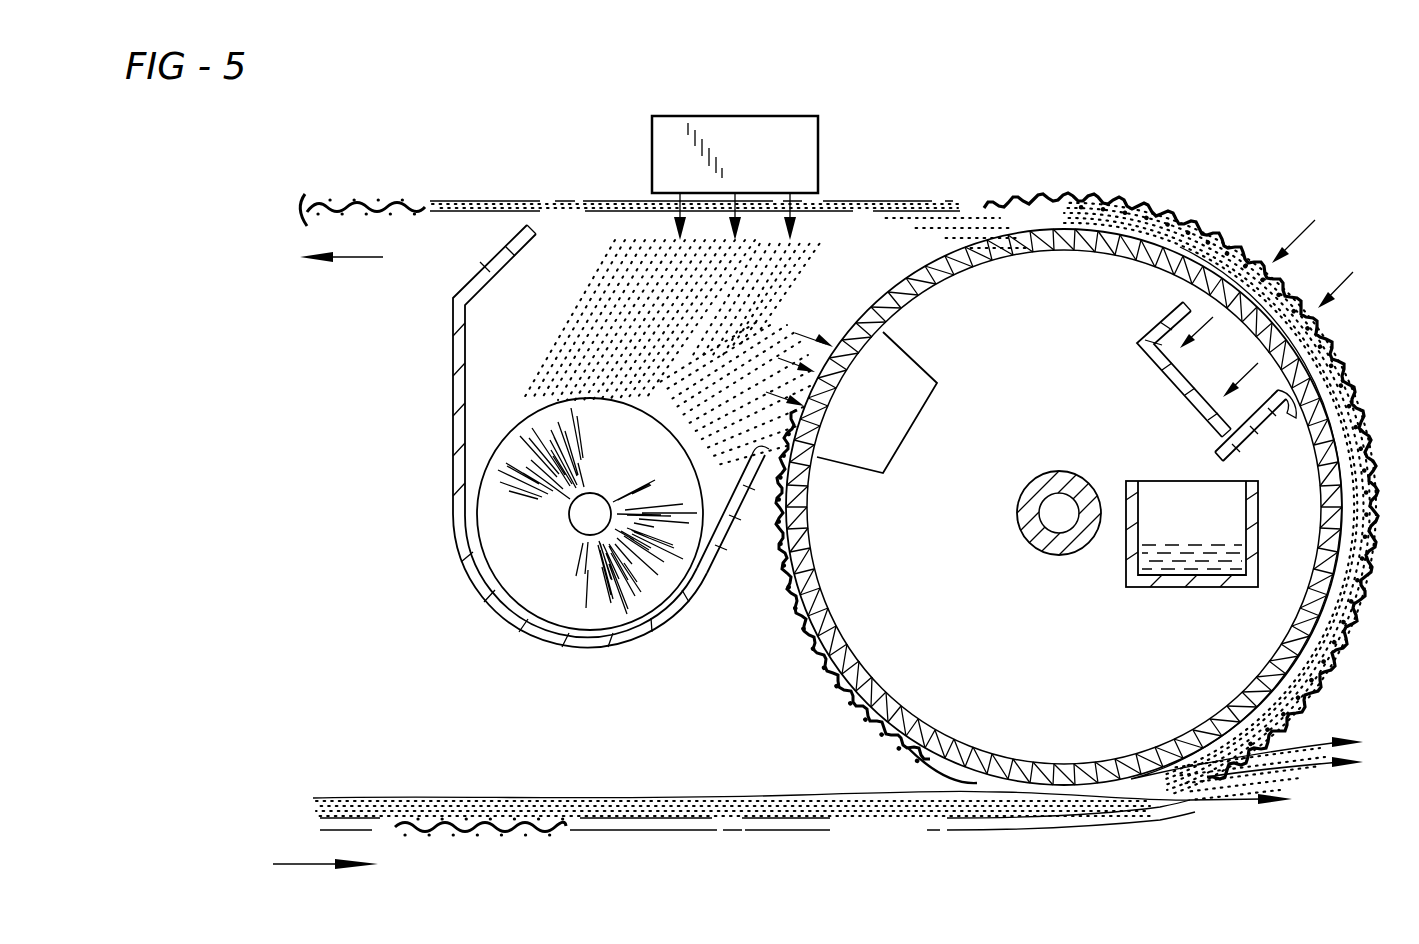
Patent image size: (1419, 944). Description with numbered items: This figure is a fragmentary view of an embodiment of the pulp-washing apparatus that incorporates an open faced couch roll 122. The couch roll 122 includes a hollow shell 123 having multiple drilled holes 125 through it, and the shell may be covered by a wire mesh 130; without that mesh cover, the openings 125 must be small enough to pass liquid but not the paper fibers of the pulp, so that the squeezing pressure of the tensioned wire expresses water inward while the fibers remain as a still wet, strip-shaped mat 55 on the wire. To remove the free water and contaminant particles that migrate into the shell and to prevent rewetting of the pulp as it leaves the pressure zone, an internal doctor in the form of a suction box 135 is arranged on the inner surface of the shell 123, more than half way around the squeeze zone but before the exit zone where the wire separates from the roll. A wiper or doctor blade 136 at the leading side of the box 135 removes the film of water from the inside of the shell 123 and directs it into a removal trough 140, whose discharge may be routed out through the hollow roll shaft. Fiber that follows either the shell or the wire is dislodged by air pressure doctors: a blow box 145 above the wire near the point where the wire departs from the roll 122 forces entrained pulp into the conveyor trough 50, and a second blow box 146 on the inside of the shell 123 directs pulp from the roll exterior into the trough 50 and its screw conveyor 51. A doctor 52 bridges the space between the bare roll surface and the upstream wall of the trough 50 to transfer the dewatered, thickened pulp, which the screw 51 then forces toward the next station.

The trough 50 is at (453, 412).
The screw conveyor 51 is at (527, 578).
The doctor 52 is at (735, 502).
The mat 55 is at (988, 225).
The couch roll 122 is at (818, 686).
The hollow shell 123 is at (908, 699).
The drilled holes 125 is at (887, 685).
The wire mesh 130 is at (477, 202).
The suction box 135 is at (1173, 387).
The doctor blade 136 is at (1217, 445).
The removal trough 140 is at (1126, 548).
The blow box 145 is at (805, 132).
The second blow box 146 is at (895, 435).